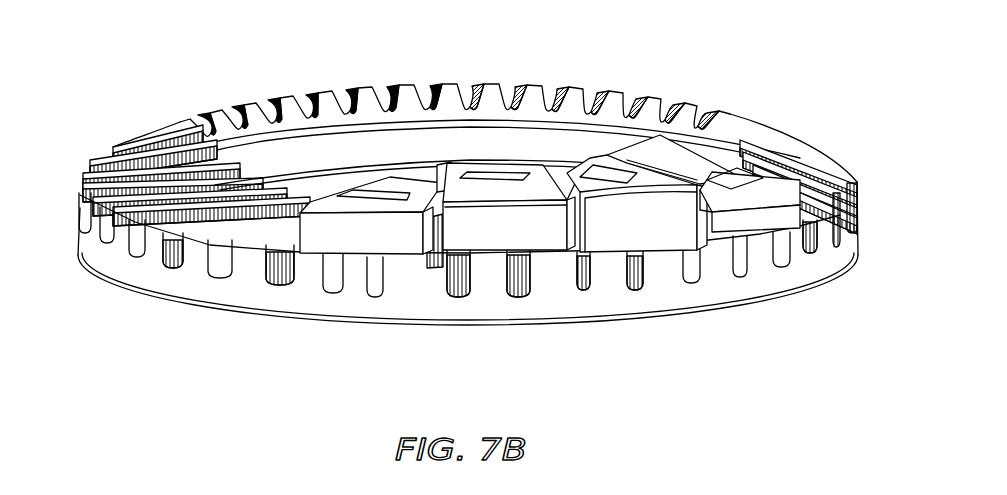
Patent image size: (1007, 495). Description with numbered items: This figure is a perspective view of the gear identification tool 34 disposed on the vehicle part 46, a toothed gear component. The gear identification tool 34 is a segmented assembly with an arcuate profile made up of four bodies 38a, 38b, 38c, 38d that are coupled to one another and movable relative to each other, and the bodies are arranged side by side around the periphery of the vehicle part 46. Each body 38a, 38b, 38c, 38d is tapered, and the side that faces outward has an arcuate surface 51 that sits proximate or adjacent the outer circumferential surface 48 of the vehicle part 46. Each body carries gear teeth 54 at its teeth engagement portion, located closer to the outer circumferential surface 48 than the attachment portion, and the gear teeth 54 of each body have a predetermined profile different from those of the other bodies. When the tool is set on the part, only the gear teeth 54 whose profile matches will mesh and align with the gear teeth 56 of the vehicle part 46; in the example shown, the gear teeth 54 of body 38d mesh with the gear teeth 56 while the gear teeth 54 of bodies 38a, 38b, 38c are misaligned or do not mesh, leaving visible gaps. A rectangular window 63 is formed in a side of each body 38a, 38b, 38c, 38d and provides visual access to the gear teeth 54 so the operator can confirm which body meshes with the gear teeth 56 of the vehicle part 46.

The gear identification tool 34 is at (425, 177).
The body 38a is at (768, 212).
The body 38b is at (650, 233).
The body 38c is at (517, 228).
The body 38d is at (352, 240).
The vehicle part 46 is at (127, 320).
The outer circumferential surface 48 is at (262, 260).
The arcuate surface 51 is at (397, 220).
The gear teeth 54 is at (397, 273).
The gear teeth 56 is at (262, 252).
The window 63 is at (380, 197).